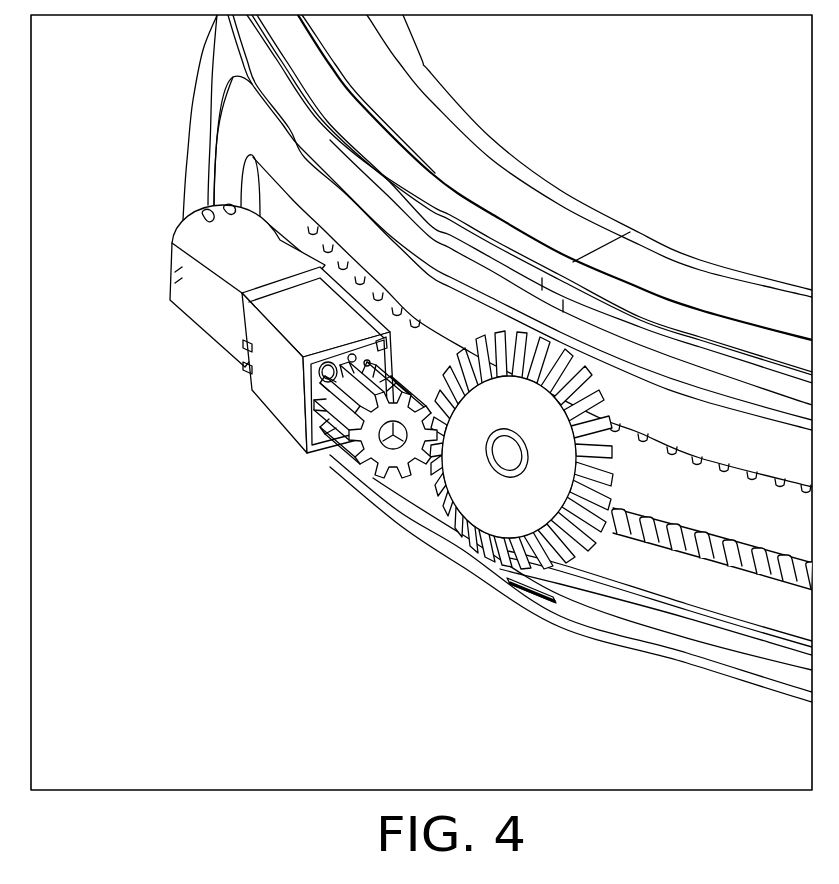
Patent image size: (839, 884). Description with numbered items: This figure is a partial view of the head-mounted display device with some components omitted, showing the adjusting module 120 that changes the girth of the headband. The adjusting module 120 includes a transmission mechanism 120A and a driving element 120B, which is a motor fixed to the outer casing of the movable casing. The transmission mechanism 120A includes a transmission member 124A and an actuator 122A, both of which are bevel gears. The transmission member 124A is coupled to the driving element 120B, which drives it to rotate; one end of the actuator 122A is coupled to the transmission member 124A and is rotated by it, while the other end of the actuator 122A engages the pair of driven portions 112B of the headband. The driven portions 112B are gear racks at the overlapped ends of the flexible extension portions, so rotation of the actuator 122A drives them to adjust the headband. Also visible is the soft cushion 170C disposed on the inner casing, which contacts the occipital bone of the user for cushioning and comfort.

The adjusting module 120 is at (133, 418).
The driving element 120B is at (227, 330).
The transmission mechanism 120A is at (208, 470).
The transmission member 124A is at (337, 467).
The actuator 122A is at (470, 530).
The soft cushion 170C is at (530, 198).
The driven portions 112B is at (728, 465).